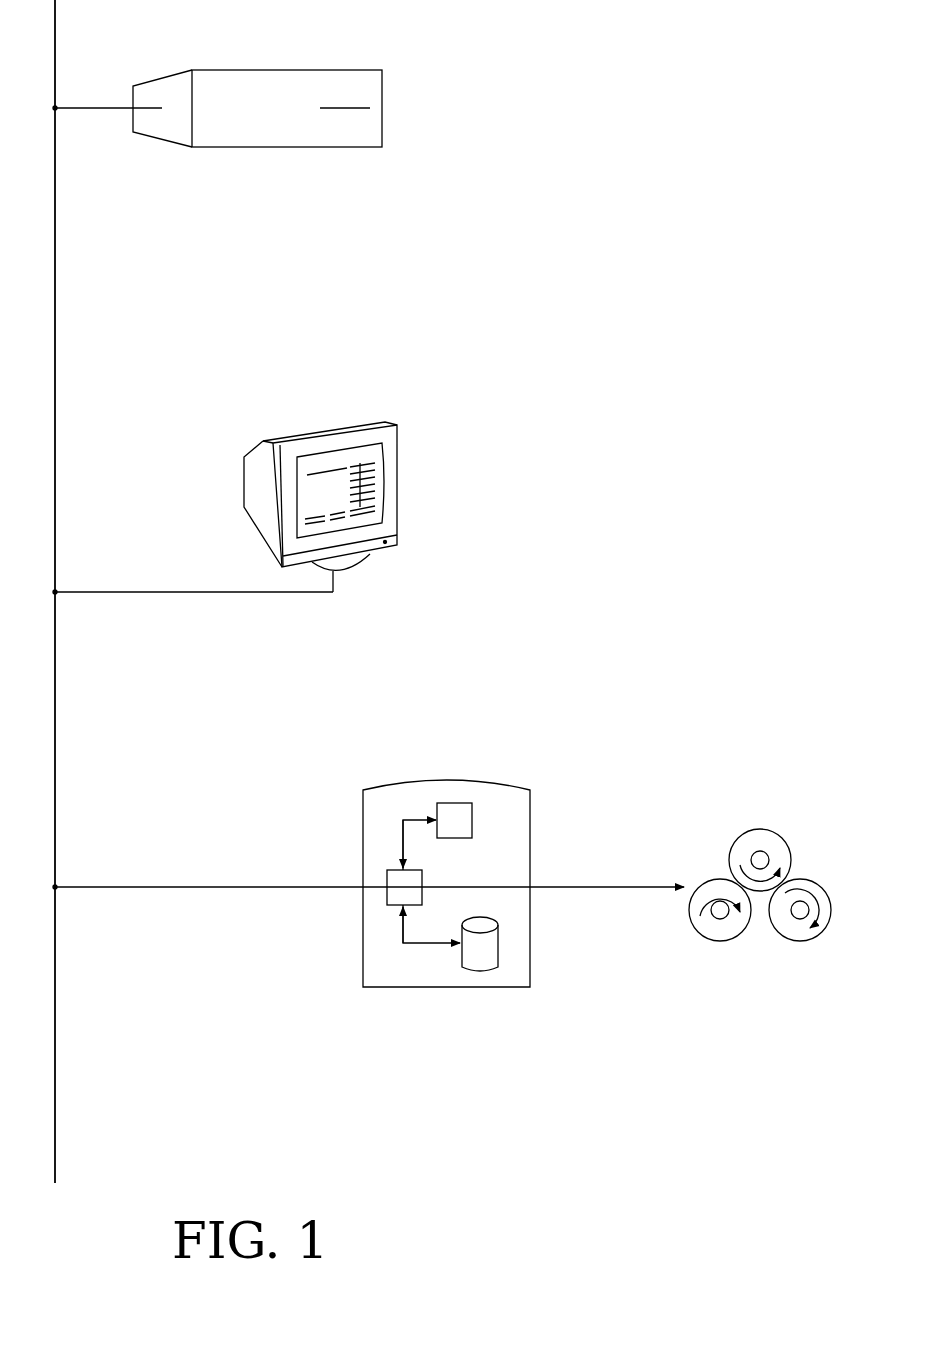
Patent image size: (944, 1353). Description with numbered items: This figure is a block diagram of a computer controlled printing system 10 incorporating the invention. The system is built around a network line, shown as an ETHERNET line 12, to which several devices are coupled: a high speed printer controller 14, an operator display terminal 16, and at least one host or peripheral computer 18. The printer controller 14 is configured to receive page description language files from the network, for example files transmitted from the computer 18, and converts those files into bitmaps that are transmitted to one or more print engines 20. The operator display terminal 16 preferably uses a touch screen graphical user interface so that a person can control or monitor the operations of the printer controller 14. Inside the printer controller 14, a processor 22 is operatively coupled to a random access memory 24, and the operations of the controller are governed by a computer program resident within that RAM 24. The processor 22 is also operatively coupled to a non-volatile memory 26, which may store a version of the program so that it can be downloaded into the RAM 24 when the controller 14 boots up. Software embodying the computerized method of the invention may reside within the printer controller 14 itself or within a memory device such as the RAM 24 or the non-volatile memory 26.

The computer controlled printing system 10 is at (664, 344).
The ETHERNET line 12 is at (55, 325).
The high speed printer controller 14 is at (493, 780).
The operator display terminal 16 is at (397, 473).
The host or peripheral computer 18 is at (340, 70).
The print engine 20 is at (800, 818).
The processor 22 is at (422, 880).
The random access memory 24 is at (450, 803).
The non-volatile memory 26 is at (498, 945).